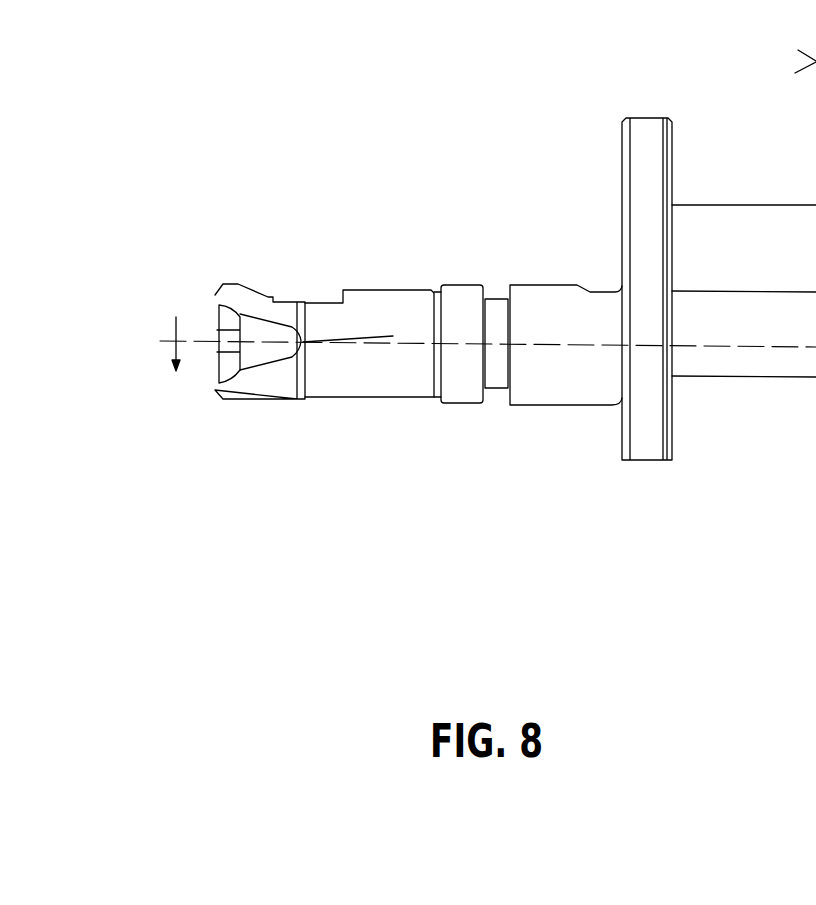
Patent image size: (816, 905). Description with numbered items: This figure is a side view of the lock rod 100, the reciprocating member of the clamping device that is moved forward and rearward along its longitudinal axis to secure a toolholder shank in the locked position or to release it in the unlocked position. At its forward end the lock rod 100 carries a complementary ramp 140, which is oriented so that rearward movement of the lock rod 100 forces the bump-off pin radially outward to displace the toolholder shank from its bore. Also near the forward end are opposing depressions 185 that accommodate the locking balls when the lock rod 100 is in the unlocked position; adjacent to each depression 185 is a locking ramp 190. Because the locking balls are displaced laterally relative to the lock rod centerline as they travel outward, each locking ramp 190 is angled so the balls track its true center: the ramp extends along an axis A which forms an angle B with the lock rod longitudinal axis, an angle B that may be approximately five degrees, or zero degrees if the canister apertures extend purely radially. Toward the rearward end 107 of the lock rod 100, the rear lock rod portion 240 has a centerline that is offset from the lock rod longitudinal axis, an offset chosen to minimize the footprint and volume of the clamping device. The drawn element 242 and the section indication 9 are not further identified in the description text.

The lock rod 100 is at (450, 100).
The rearward end 107 is at (815, 420).
The complementary ramp 140 is at (248, 287).
The depressions 185 is at (224, 316).
The locking ramp 190 is at (267, 357).
The rear lock rod portion 240 is at (718, 222).
The body surface 242 is at (815, 240).
The axis A is at (417, 343).
The angle B is at (357, 303).
The section line 9 is at (492, 201).